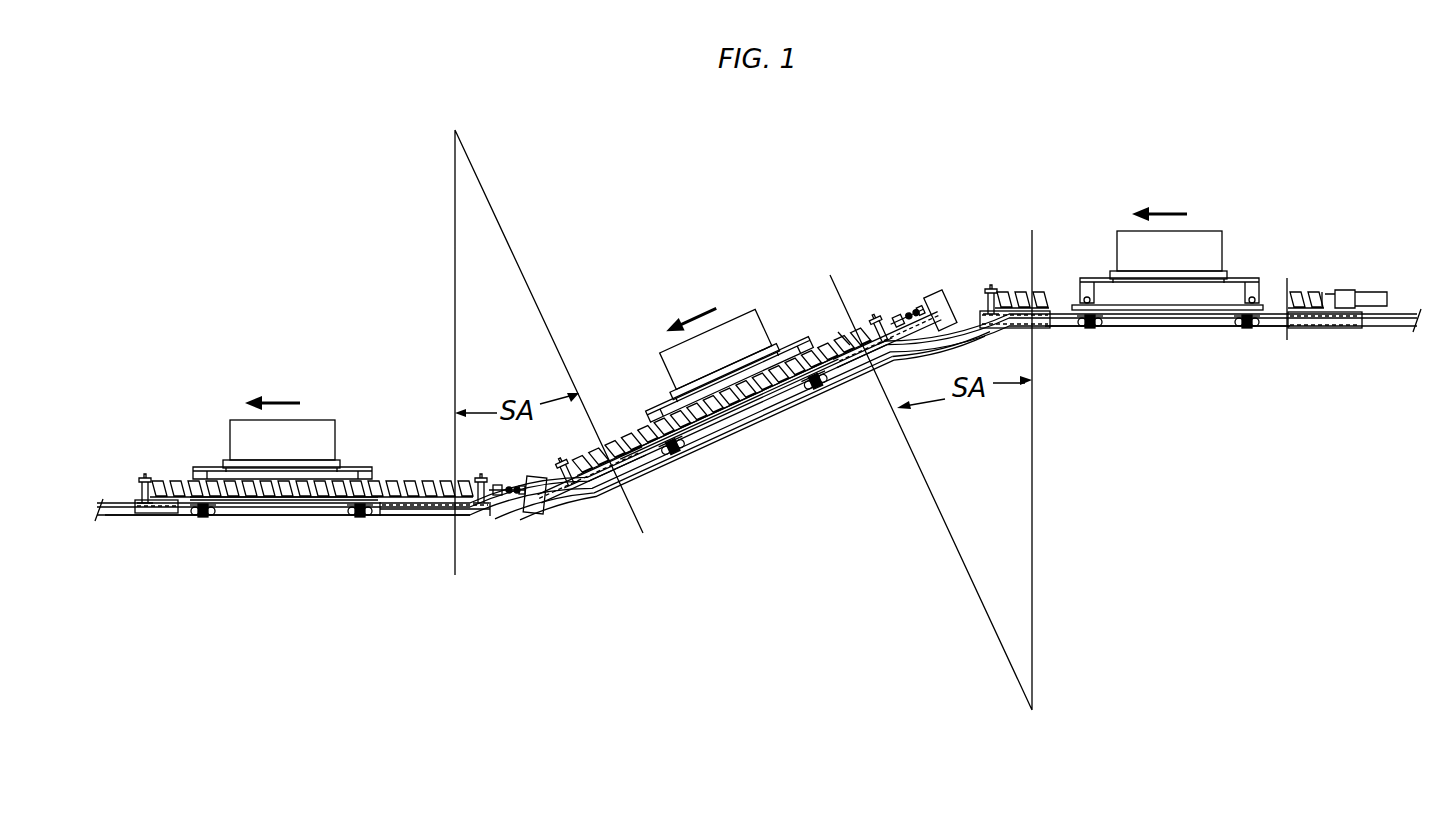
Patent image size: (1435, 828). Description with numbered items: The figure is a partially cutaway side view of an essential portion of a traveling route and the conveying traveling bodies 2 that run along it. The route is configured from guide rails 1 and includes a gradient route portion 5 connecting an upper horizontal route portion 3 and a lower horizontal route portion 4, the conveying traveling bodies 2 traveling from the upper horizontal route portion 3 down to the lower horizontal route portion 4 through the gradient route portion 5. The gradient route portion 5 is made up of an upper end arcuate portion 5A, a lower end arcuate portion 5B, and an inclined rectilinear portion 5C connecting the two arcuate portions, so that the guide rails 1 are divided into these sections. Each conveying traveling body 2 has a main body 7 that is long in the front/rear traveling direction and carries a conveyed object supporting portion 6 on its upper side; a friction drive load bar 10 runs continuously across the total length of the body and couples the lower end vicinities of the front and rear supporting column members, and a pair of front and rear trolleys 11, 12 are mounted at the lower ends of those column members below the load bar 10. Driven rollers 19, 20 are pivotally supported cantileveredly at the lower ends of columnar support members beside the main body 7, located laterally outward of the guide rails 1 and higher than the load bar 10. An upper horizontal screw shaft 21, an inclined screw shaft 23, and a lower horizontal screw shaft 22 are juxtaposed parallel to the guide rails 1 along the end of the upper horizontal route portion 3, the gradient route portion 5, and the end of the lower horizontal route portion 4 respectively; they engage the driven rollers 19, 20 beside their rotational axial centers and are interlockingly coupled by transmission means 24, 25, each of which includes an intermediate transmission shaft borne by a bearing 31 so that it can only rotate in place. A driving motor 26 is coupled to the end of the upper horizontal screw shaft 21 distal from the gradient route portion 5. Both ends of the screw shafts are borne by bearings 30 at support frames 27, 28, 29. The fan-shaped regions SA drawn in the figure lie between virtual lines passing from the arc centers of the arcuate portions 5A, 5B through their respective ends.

The guide rails 1 is at (118, 518).
The conveying traveling body 2 is at (320, 416).
The upper horizontal route portion 3 is at (1163, 332).
The lower horizontal route portion 4 is at (268, 520).
The gradient route portion 5 is at (752, 400).
The upper end arcuate portion 5A is at (965, 312).
The lower end arcuate portion 5B is at (549, 506).
The inclined rectilinear portion 5C is at (768, 420).
The conveyed object supporting portion 6 is at (238, 430).
The main body 7 is at (287, 468).
The friction drive load bar 10 is at (1198, 310).
The front trolley 11 is at (202, 517).
The rear trolley 12 is at (359, 517).
The driven roller 19 is at (228, 494).
The driven roller 20 is at (360, 470).
The upper horizontal screw shaft 21 is at (1040, 286).
The lower horizontal screw shaft 22 is at (318, 504).
The inclined screw shaft 23 is at (727, 424).
The transmission means 24 is at (907, 310).
The transmission means 25 is at (577, 490).
The driving motor 26 is at (1352, 292).
The support frame 27 is at (1322, 330).
The support frame 28 is at (430, 506).
The support frame 29 is at (630, 485).
The bearing 30 is at (146, 480).
The bearing 31 is at (534, 512).